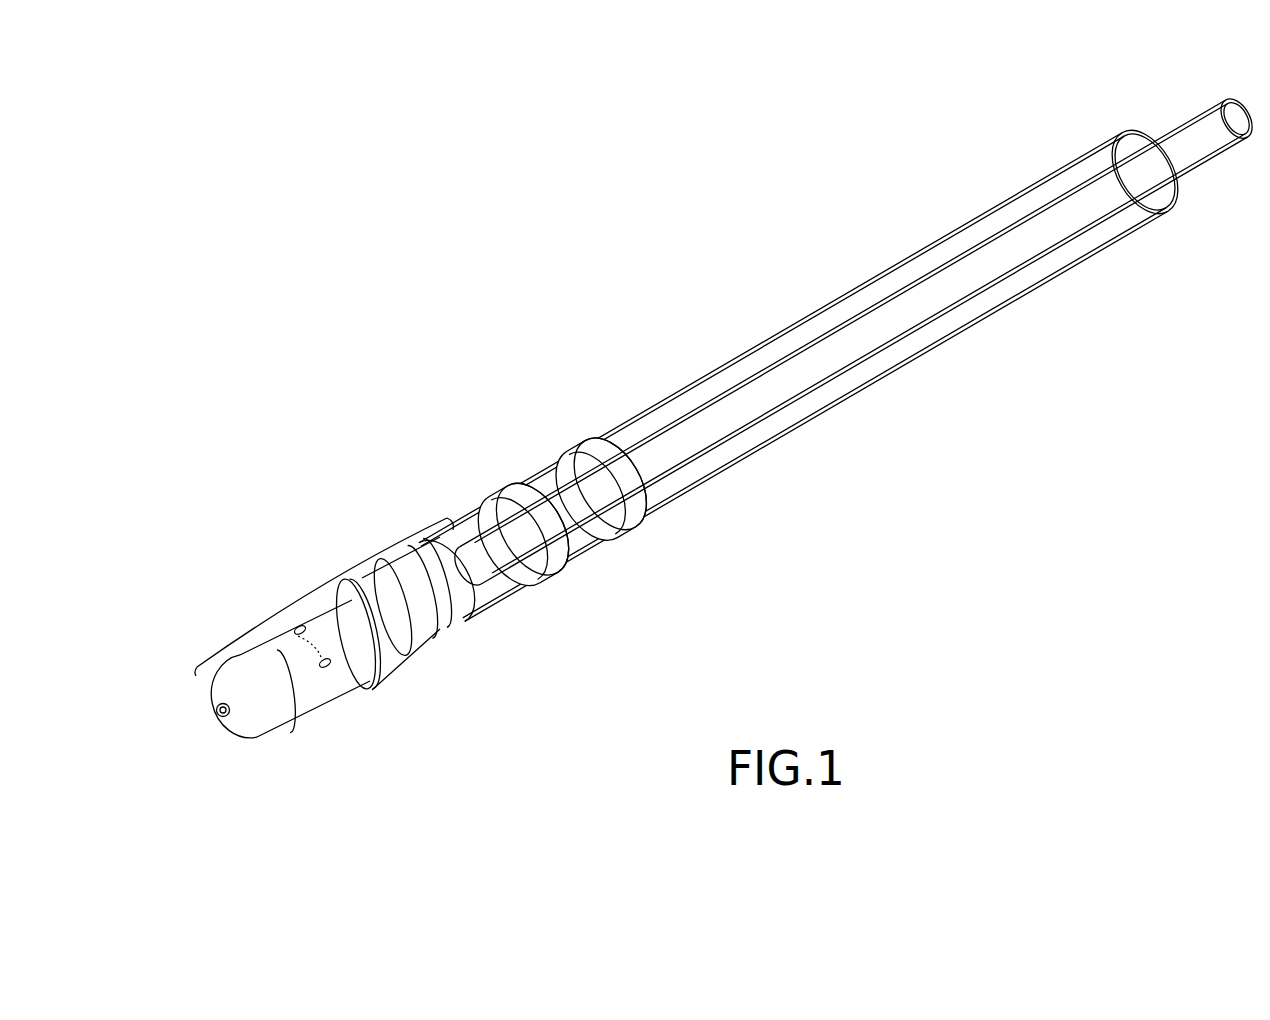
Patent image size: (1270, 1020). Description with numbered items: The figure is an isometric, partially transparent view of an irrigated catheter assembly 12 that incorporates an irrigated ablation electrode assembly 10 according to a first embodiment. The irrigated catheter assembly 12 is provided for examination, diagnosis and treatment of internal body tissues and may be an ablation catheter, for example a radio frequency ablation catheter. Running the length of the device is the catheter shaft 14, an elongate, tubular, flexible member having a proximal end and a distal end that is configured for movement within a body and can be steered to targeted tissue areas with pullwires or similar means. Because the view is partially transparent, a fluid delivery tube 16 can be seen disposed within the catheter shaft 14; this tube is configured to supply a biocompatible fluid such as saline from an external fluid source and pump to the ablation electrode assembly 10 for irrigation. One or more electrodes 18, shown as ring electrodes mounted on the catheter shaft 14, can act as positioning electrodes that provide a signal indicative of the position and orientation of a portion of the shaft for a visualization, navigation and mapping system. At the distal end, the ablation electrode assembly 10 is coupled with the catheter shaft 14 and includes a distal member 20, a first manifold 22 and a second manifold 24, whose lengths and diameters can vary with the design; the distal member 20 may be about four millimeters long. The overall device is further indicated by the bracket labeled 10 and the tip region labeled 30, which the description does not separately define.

The ablation electrode assembly 10 is at (323, 588).
The irrigated catheter assembly 12 is at (980, 352).
The catheter shaft 14 is at (713, 457).
The fluid delivery tube 16 is at (1195, 152).
The electrodes 18 is at (598, 453).
The distal member 20 is at (271, 718).
The first manifold 22 is at (458, 582).
The second manifold 24 is at (342, 683).
The distal tip 30 is at (210, 690).